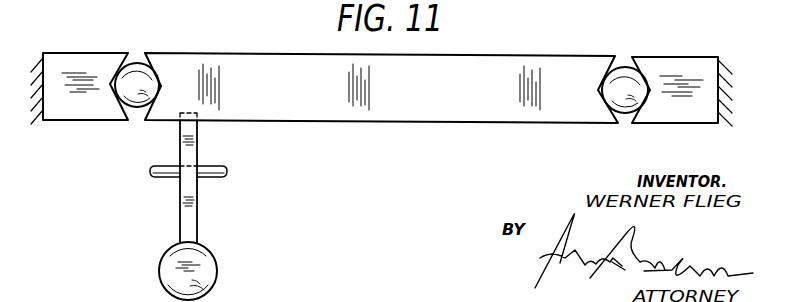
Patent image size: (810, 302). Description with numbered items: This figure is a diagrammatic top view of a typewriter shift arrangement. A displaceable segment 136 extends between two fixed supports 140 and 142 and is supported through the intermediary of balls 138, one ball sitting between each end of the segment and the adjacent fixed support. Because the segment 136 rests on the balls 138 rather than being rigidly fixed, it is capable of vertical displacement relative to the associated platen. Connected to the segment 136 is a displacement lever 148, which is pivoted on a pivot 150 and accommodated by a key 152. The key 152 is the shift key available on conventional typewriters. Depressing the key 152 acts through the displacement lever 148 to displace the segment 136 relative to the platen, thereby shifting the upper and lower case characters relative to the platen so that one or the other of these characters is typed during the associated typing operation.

The displaceable segment 136 is at (480, 118).
The balls 138 is at (134, 65).
The fixed support 140 is at (78, 58).
The fixed support 142 is at (682, 60).
The displacement lever 148 is at (197, 140).
The pivot 150 is at (220, 178).
The key 152 is at (207, 260).